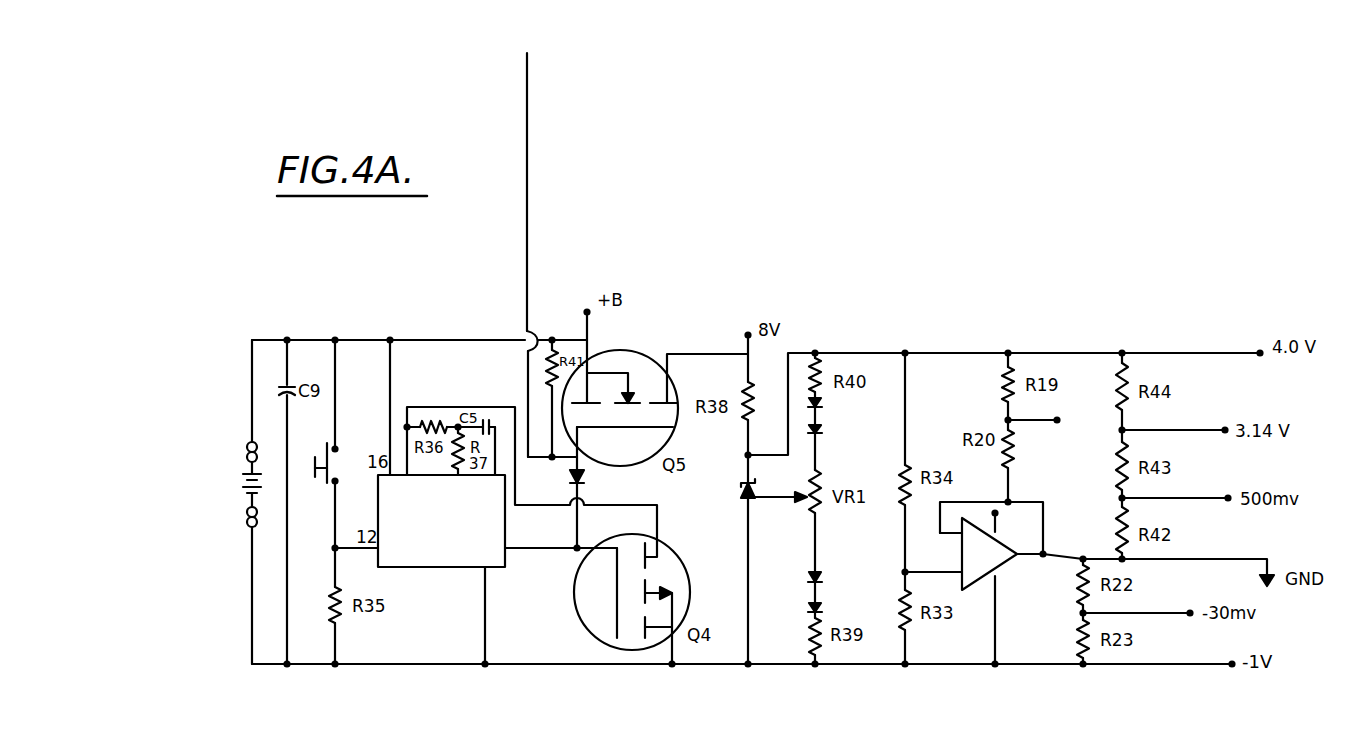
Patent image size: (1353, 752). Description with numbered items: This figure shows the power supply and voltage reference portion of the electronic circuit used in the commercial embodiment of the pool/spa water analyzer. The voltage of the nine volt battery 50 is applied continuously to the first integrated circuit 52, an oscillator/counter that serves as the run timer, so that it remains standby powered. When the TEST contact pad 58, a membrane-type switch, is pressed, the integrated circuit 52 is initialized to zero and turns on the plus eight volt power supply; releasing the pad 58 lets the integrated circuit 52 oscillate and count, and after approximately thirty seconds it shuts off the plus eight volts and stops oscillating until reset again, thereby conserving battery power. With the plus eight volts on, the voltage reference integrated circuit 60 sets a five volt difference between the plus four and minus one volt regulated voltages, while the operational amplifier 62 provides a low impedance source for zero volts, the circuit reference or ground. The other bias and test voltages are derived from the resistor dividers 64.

The 9 volt battery 50 is at (247, 451).
The integrated circuit IC1 52 is at (456, 567).
The TEST contact pad 58 is at (314, 462).
The integrated circuit IC7 60 is at (758, 506).
The integrated circuit IC2a 62 is at (1007, 560).
The resistor dividers 64 is at (1008, 420).